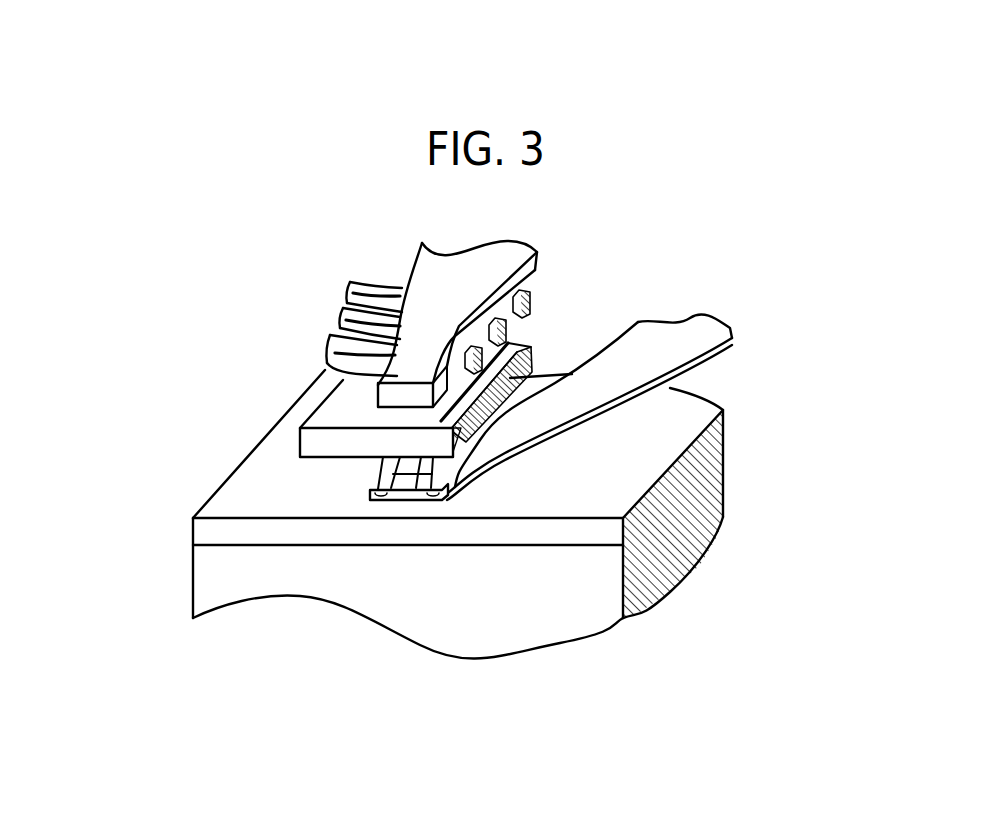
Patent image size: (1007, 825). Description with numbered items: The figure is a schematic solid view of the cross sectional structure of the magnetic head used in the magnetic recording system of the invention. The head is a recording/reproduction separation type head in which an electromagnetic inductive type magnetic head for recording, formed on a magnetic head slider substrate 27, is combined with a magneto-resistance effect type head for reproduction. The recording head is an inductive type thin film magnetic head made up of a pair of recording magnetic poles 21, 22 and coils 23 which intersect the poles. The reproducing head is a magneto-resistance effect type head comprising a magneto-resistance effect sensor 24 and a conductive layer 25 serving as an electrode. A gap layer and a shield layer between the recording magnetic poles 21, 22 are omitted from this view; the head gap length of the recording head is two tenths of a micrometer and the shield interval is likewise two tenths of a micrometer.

The recording magnetic pole 21 is at (388, 400).
The recording magnetic pole 22 is at (260, 443).
The coils 23 is at (350, 325).
The magneto-resistance effect sensor 24 is at (405, 495).
The conductive layer 25 is at (380, 477).
The magnetic head slider substrate 27 is at (525, 632).